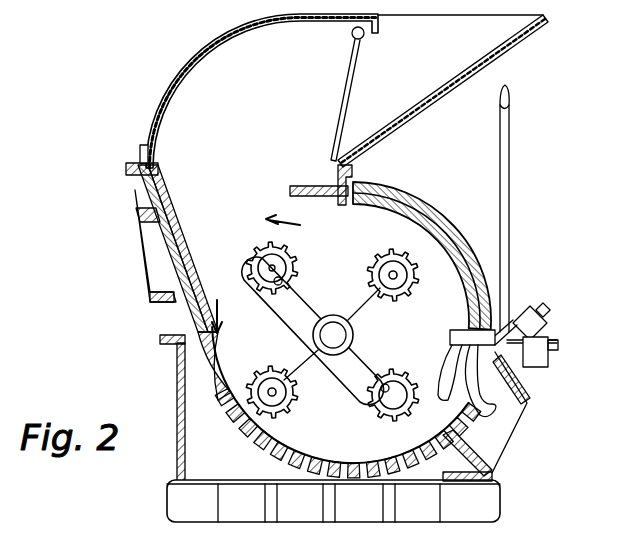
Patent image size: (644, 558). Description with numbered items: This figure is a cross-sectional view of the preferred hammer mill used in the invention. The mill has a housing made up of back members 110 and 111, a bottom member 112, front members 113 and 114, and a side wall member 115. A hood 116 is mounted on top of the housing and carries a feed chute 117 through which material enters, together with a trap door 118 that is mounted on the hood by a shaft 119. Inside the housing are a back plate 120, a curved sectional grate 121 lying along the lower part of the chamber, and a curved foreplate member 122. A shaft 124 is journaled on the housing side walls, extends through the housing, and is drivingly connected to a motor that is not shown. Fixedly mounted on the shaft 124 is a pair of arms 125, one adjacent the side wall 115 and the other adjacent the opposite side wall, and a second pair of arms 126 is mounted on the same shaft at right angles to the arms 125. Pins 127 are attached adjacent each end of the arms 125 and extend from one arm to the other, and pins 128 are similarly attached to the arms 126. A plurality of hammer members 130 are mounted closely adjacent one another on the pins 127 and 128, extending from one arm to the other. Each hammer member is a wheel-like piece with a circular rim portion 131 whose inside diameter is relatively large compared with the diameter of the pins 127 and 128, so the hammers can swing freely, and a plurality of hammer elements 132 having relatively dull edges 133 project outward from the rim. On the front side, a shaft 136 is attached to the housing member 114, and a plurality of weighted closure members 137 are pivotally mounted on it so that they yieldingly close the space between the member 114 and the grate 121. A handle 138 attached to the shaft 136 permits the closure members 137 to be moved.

The back member 110 is at (153, 268).
The back member 111 is at (176, 388).
The bottom member 112 is at (168, 503).
The front member 113 is at (493, 475).
The front member 114 is at (432, 212).
The side wall member 115 is at (185, 187).
The hood 116 is at (208, 48).
The feed chute 117 is at (500, 48).
The trap door 118 is at (344, 84).
The shaft 119 is at (352, 36).
The back plate 120 is at (153, 225).
The curved sectional grate 121 is at (248, 448).
The curved foreplate member 122 is at (300, 180).
The shaft 124 is at (328, 325).
The pair of arms 125 is at (382, 321).
The pair of arms 126 is at (350, 384).
The pins 127 is at (390, 262).
The pins 128 is at (283, 287).
The hammer members 130 is at (249, 247).
The circular rim portion 131 is at (248, 258).
The hammer elements 132 is at (272, 244).
The dull edges 133 is at (282, 246).
The shaft 136 is at (505, 300).
The weighted closure members 137 is at (474, 420).
The handle 138 is at (509, 185).